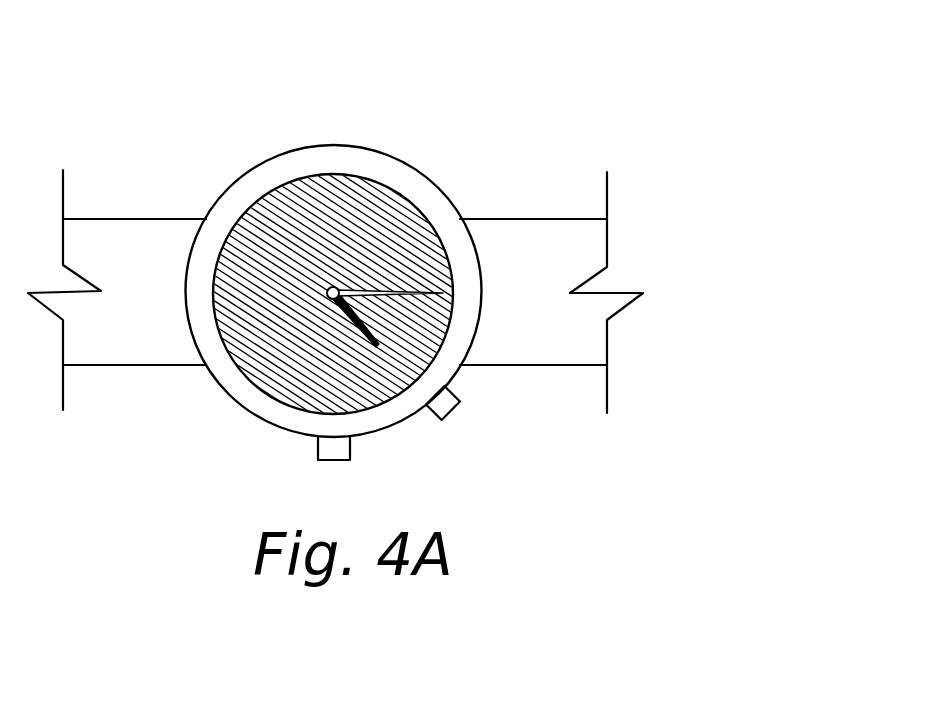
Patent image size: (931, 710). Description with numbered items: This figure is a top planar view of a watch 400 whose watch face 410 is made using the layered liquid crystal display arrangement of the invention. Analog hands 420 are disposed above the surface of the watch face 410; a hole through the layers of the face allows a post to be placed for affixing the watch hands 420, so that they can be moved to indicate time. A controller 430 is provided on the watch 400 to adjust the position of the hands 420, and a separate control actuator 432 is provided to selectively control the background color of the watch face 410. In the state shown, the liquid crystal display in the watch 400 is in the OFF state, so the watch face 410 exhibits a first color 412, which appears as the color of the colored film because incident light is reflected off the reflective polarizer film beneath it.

The watch 400 is at (490, 86).
The watch face 410 is at (367, 180).
The first color 412 is at (310, 373).
The analog hands 420 is at (390, 284).
The controller 430 is at (340, 447).
The control actuator 432 is at (443, 403).